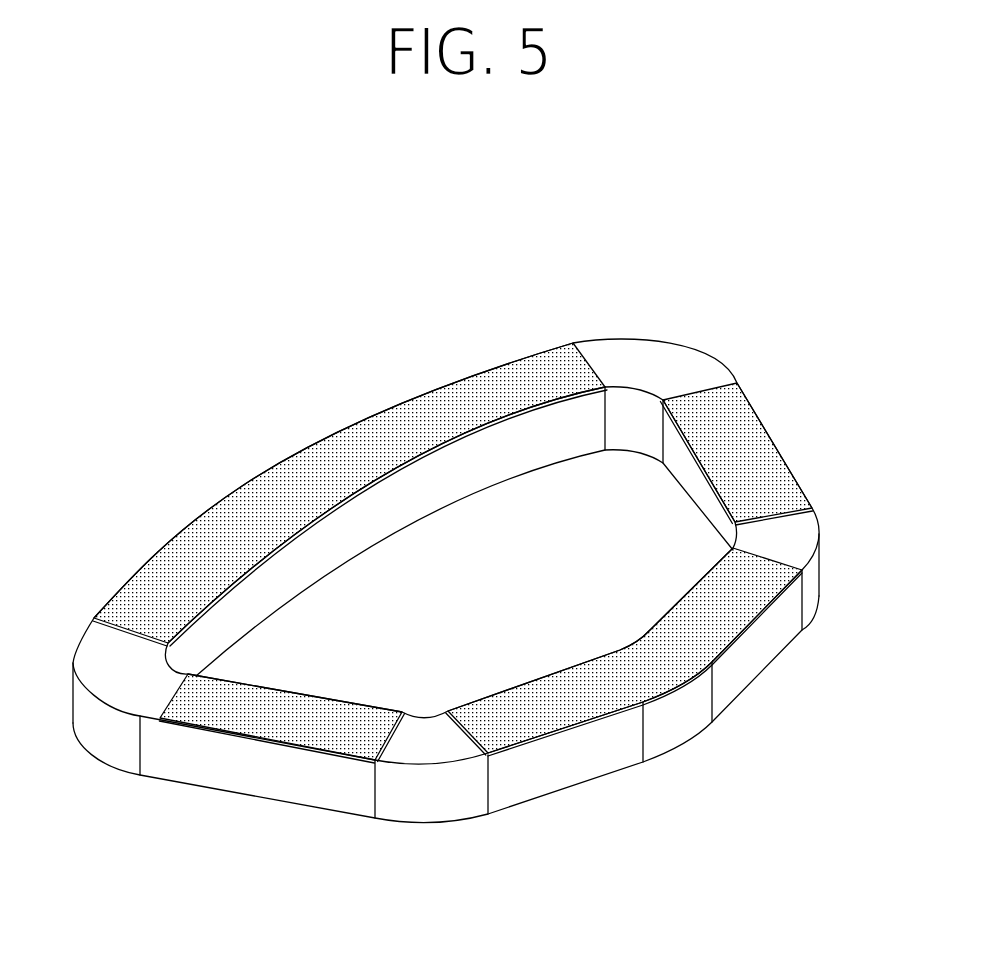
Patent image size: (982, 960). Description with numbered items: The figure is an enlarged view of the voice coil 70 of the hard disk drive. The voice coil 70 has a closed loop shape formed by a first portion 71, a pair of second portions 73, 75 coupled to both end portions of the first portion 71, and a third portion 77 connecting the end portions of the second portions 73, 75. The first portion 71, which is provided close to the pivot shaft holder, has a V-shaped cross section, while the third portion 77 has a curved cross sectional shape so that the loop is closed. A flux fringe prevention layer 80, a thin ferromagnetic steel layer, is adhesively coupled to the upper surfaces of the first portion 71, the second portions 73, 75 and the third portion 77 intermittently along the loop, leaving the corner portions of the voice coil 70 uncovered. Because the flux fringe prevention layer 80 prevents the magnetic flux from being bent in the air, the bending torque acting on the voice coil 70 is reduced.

The voice coil 70 is at (95, 287).
The first portion 71 is at (587, 760).
The second portion 73 is at (252, 768).
The second portion 75 is at (703, 505).
The third portion 77 is at (333, 535).
The flux fringe prevention layer 80 is at (320, 460).